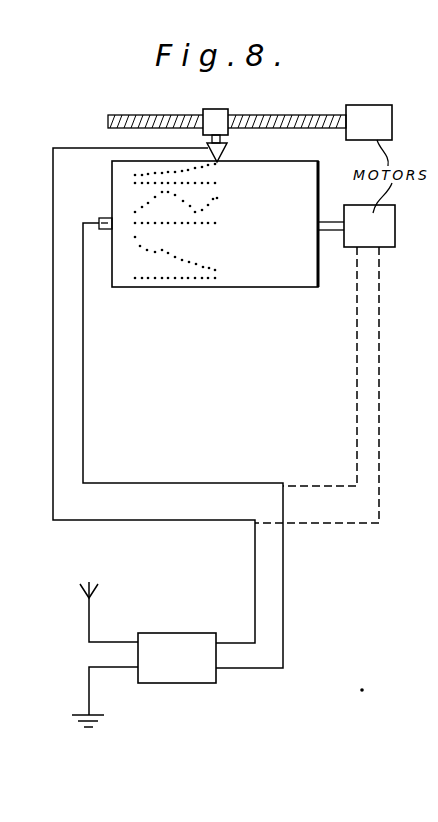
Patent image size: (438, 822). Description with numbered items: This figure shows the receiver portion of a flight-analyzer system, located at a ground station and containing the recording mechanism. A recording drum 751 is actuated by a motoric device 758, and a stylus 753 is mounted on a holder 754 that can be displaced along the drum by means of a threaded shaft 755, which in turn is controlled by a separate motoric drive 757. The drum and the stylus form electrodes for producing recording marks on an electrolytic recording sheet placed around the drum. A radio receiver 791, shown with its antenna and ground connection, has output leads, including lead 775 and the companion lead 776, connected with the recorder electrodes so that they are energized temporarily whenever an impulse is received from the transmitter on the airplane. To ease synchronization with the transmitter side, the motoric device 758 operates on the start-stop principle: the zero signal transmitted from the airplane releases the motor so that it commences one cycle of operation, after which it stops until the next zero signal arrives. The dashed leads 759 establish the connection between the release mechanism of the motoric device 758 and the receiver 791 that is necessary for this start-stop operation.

The recording drum 751 is at (275, 280).
The stylus 753 is at (228, 147).
The holder 754 is at (213, 108).
The threaded shaft 755 is at (268, 107).
The motoric drive 757 is at (367, 110).
The motoric device 758 is at (392, 242).
The leads 759 is at (357, 363).
The output lead 775 is at (84, 357).
The signal line 776 is at (53, 340).
The radio receiver 791 is at (176, 634).